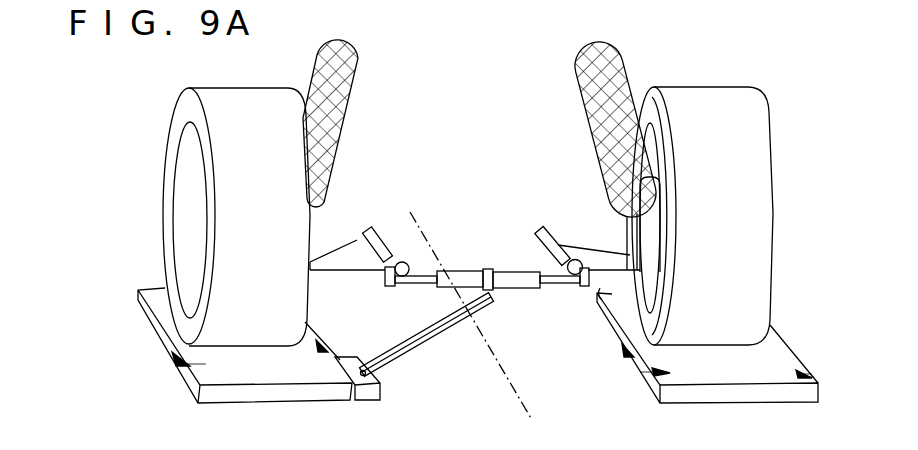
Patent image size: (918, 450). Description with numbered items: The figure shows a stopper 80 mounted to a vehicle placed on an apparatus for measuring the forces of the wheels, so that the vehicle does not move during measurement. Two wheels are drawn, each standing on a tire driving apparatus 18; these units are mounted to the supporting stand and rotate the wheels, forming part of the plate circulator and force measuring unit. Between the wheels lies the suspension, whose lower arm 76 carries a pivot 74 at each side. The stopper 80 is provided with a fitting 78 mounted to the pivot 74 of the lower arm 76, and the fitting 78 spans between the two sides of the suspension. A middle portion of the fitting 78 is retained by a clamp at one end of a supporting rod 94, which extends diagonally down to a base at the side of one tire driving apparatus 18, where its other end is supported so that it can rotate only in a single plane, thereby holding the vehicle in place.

The tire driving apparatus 18 is at (255, 398).
The pivot 74 is at (409, 266).
The lower arm 76 is at (342, 250).
The fitting 78 is at (511, 288).
The stopper 80 is at (463, 358).
The supporting rod 94 is at (420, 347).